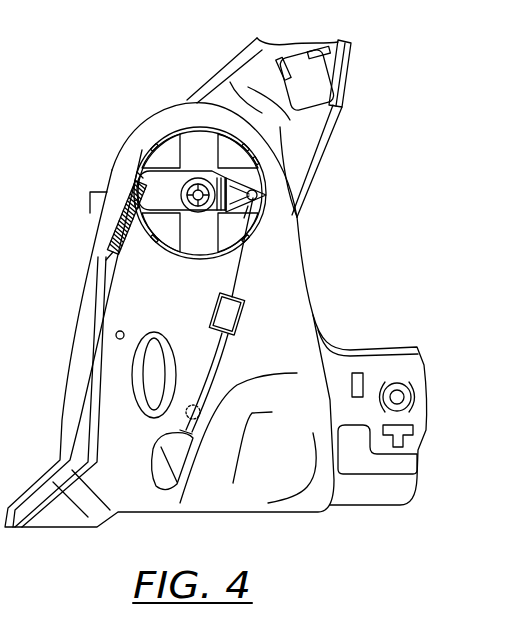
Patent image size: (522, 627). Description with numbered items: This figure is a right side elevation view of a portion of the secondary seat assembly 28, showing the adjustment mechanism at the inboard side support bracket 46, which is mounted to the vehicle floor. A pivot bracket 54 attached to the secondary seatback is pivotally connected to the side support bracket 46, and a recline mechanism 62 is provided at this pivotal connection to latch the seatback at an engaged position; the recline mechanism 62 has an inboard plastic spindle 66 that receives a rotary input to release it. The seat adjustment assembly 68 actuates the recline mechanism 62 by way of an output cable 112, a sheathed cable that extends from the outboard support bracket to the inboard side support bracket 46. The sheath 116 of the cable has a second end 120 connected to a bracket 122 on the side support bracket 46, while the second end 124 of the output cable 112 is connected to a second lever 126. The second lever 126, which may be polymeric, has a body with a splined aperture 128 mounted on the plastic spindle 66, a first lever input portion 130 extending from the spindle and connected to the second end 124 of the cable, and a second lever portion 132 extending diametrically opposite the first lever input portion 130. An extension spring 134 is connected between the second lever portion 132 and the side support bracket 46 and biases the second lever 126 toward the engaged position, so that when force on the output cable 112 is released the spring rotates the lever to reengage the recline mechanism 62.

The secondary seat assembly 28 is at (89, 94).
The inboard side support bracket 46 is at (288, 472).
The pivot bracket 54 is at (217, 88).
The recline mechanism 62 is at (193, 148).
The plastic spindle 66 is at (199, 191).
The seat adjustment assembly 68 is at (166, 181).
The output cable 112 is at (208, 372).
The sheath 116 is at (197, 396).
The second end of the sheath 120 is at (230, 318).
The bracket 122 is at (218, 308).
The second end of the output cable 124 is at (257, 198).
The second lever 126 is at (230, 176).
The splined aperture 128 is at (193, 192).
The first lever input portion 130 is at (258, 183).
The second lever portion 132 is at (143, 176).
The extension spring 134 is at (118, 222).